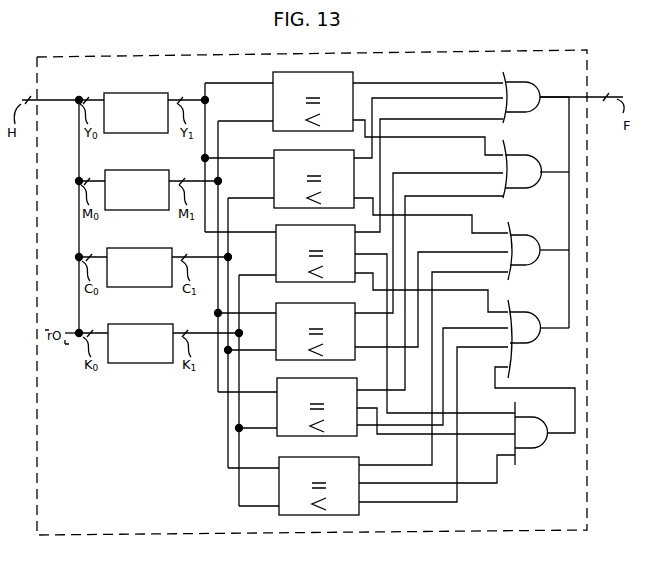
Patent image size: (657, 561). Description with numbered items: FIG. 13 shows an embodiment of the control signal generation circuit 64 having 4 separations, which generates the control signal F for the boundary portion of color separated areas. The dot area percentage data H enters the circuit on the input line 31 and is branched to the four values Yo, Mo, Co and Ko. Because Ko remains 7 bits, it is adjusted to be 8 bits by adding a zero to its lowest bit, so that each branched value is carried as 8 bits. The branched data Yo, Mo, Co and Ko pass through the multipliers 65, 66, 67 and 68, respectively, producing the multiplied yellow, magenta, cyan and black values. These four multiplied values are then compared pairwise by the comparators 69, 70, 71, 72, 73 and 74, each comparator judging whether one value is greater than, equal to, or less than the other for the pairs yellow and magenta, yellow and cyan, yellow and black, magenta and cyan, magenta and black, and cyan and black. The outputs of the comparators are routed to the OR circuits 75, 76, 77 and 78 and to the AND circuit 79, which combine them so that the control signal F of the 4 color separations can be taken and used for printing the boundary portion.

The separations 4 is at (581, 87).
The bits 7 is at (82, 300).
The bits 8 is at (139, 210).
The input data line H 31 is at (48, 93).
The control signal generation circuit 64 is at (588, 130).
The multiplier 65 is at (148, 93).
The multiplier 66 is at (145, 170).
The multiplier 67 is at (148, 248).
The multiplier 68 is at (150, 324).
The comparator 69 is at (353, 73).
The comparator 70 is at (337, 150).
The comparator 71 is at (339, 225).
The comparator 72 is at (343, 303).
The comparator 73 is at (343, 378).
The comparator 74 is at (345, 457).
The OR circuit 75 is at (525, 82).
The OR circuit 76 is at (525, 155).
The OR circuit 77 is at (525, 235).
The OR circuit 78 is at (525, 312).
The AND circuit 79 is at (532, 417).